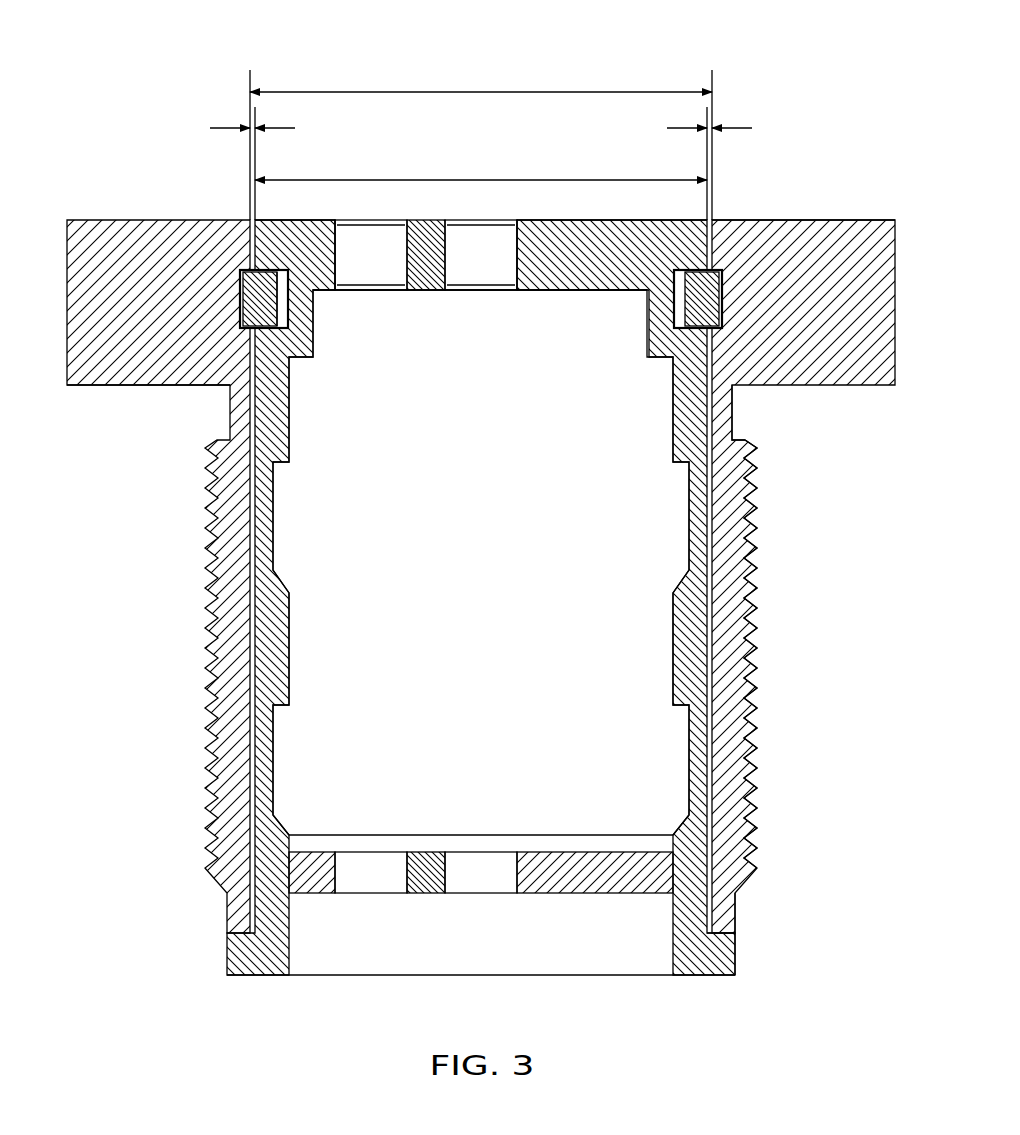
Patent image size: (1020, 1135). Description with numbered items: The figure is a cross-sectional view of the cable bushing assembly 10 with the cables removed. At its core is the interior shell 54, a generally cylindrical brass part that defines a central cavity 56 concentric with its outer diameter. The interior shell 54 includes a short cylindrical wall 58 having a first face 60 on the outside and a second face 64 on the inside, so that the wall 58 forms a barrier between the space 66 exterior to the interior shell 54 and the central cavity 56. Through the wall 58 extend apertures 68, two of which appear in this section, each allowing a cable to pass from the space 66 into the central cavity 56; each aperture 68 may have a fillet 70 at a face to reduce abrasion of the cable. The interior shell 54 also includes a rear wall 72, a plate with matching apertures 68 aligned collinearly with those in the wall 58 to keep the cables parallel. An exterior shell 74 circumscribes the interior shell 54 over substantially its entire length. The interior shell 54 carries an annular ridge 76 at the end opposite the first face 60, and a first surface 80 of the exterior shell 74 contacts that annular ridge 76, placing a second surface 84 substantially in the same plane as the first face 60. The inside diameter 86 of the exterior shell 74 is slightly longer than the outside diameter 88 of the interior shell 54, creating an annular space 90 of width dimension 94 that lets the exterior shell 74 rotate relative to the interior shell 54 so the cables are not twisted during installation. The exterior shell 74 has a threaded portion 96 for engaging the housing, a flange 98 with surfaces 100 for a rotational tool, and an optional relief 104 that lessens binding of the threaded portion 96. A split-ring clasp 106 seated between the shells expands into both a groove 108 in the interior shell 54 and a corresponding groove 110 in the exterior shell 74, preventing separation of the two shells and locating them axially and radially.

The cable bushing assembly 10 is at (91, 112).
The interior shell 54 is at (697, 976).
The central cavity 56 is at (658, 777).
The wall 58 is at (637, 221).
The first face 60 is at (566, 214).
The second face 64 is at (548, 293).
The space 66 is at (308, 31).
The aperture 68 is at (379, 207).
The fillet 70 is at (340, 220).
The rear wall 72 is at (580, 894).
The exterior shell 74 is at (896, 290).
The annular ridge 76 is at (736, 945).
The first surface 80 is at (722, 948).
The second surface 84 is at (786, 217).
The inside diameter 86 is at (448, 180).
The outside diameter 88 is at (395, 92).
The annular space 90 is at (249, 217).
The width dimension 94 is at (236, 128).
The threaded portion 96 is at (757, 618).
The flange 98 is at (100, 387).
The surfaces 100 is at (64, 301).
The relief 104 is at (751, 412).
The clasp 106 is at (242, 318).
The groove 108 is at (279, 271).
The corresponding groove 110 is at (239, 283).